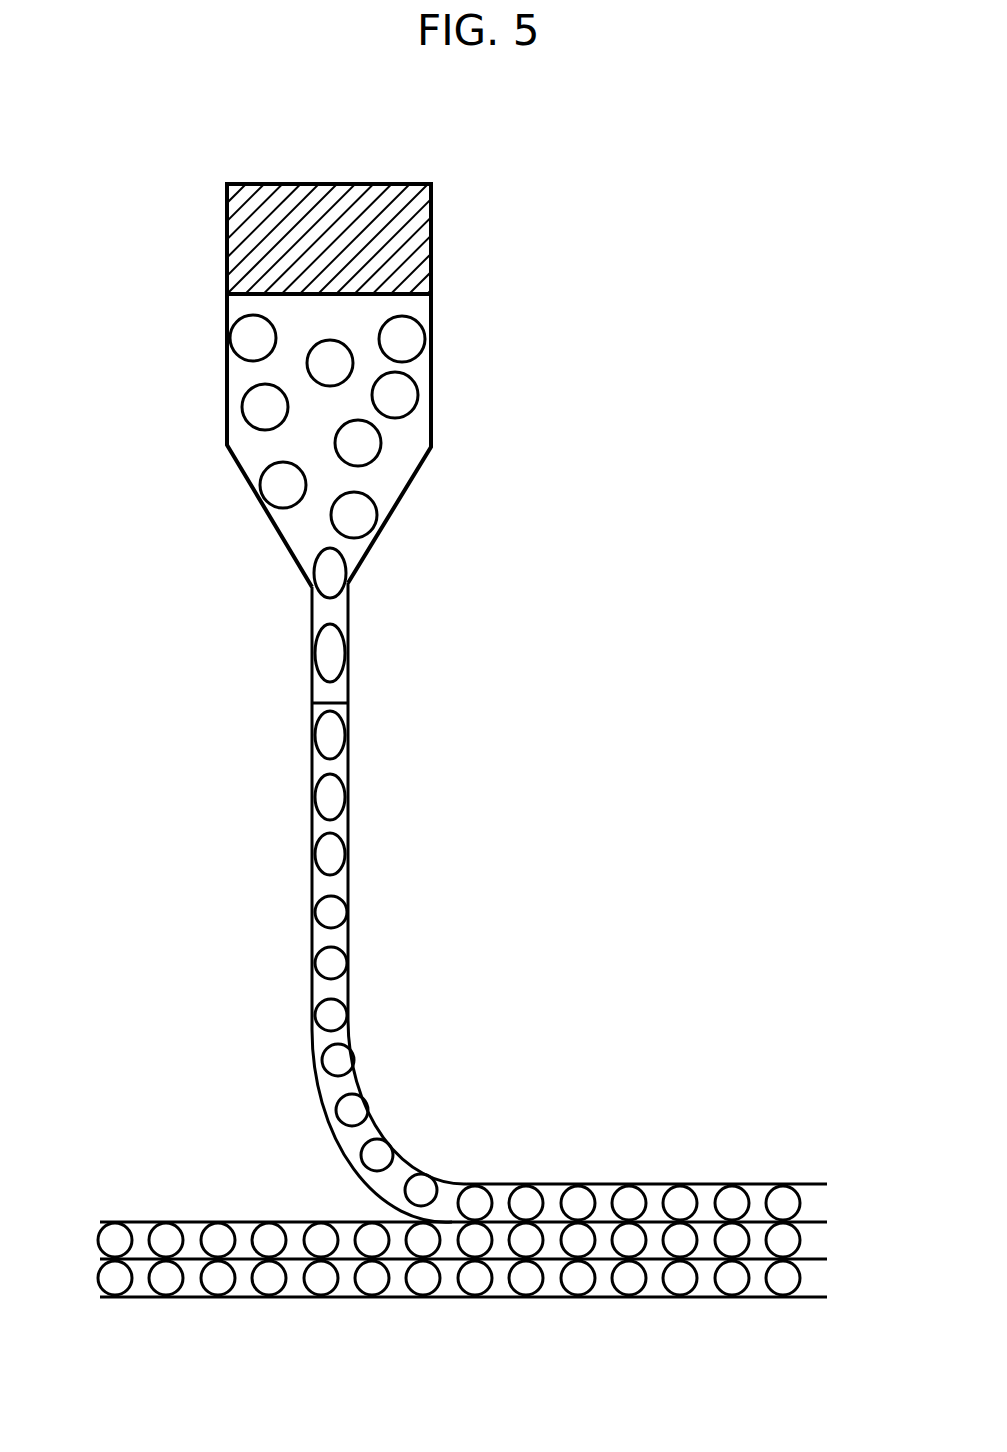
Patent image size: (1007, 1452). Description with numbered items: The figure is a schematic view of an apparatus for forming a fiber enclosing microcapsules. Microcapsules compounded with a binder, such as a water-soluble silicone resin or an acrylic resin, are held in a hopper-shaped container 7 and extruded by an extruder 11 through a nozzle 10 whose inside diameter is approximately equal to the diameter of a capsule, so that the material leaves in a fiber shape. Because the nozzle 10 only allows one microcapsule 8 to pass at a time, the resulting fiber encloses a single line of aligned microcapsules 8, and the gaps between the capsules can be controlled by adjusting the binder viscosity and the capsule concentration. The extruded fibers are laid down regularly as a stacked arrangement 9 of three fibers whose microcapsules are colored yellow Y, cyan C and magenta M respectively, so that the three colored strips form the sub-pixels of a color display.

The hopper (particle container) 7 is at (395, 452).
The particles 8 is at (398, 393).
The recording medium / particle layers 9 is at (712, 1183).
The nozzle 10 is at (350, 683).
The extruder 11 is at (430, 318).
The yellow Y is at (793, 1202).
The cyan C is at (793, 1240).
The magenta M is at (793, 1278).